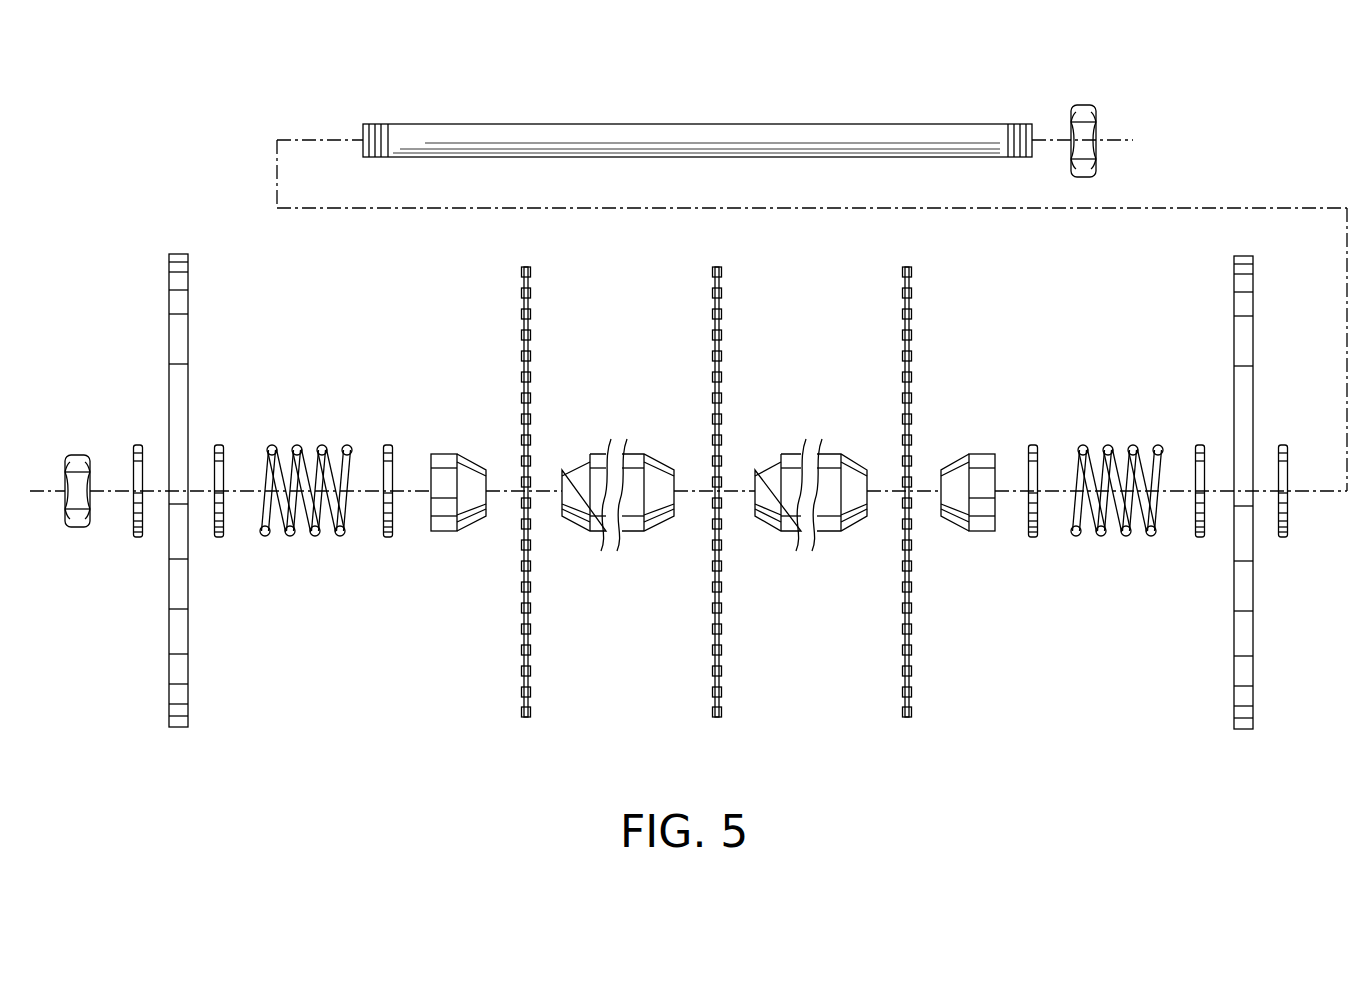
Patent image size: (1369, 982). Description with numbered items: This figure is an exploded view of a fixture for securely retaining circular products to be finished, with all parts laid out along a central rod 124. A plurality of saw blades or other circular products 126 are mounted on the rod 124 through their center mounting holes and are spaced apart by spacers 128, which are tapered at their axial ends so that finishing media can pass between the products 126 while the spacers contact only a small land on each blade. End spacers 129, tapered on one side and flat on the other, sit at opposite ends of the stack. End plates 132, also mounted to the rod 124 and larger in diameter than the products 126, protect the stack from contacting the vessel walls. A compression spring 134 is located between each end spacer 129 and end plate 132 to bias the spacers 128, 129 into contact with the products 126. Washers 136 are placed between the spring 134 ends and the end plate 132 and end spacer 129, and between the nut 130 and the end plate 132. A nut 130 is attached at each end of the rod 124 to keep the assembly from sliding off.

The central rod 124 is at (508, 124).
The circular products 126 is at (531, 326).
The spacers 128 is at (575, 454).
The end spacers 129 is at (445, 454).
The nut 130 is at (1085, 112).
The end plates 132 is at (188, 683).
The compression spring 134 is at (290, 533).
The washers 136 is at (137, 445).